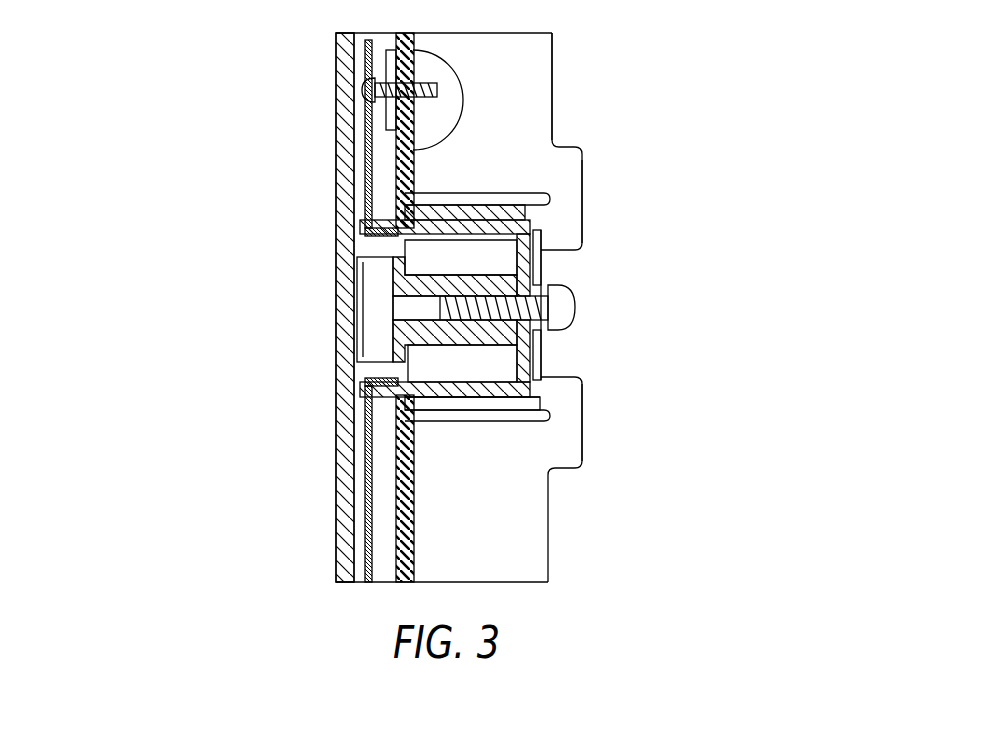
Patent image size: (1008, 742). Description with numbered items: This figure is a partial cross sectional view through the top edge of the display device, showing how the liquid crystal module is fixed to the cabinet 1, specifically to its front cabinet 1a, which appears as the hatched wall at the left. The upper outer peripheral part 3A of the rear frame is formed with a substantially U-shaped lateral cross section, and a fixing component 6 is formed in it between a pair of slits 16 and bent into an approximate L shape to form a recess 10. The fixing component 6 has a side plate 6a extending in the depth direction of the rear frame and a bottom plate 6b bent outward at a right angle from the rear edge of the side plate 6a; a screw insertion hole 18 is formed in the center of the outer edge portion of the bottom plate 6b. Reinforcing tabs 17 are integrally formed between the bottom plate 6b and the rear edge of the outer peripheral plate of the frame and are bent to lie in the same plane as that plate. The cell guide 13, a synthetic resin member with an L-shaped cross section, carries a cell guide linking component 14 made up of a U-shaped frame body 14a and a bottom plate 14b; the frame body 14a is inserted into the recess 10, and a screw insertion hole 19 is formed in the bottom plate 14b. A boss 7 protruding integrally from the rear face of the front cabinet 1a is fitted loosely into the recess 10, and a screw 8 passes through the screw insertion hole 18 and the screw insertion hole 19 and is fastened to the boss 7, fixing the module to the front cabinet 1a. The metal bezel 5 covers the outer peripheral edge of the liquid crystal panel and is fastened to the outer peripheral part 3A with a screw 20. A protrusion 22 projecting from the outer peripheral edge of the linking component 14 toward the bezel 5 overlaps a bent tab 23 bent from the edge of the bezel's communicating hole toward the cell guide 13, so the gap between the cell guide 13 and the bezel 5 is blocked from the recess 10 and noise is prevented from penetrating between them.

The cabinet 1 is at (345, 307).
The front cabinet 1a is at (338, 520).
The outer peripheral part 3A is at (558, 62).
The bezel 5 is at (366, 165).
The fixing component 6 is at (683, 350).
The side plate 6a is at (548, 345).
The bottom plate 6b is at (541, 405).
The boss 7 is at (455, 290).
The screw 8 is at (577, 300).
The recess 10 is at (498, 205).
The cell guide 13 is at (406, 553).
The cell guide linking component 14 is at (545, 490).
The U-shaped frame body 14a is at (448, 421).
The bottom plate 14b is at (508, 421).
The slit 16 is at (458, 198).
The reinforcing tab 17 is at (575, 205).
The screw insertion hole 18 is at (556, 318).
The screw insertion hole 19 is at (520, 325).
The screw 20 is at (366, 90).
The protrusion 22 is at (370, 394).
The bent tab 23 is at (370, 350).